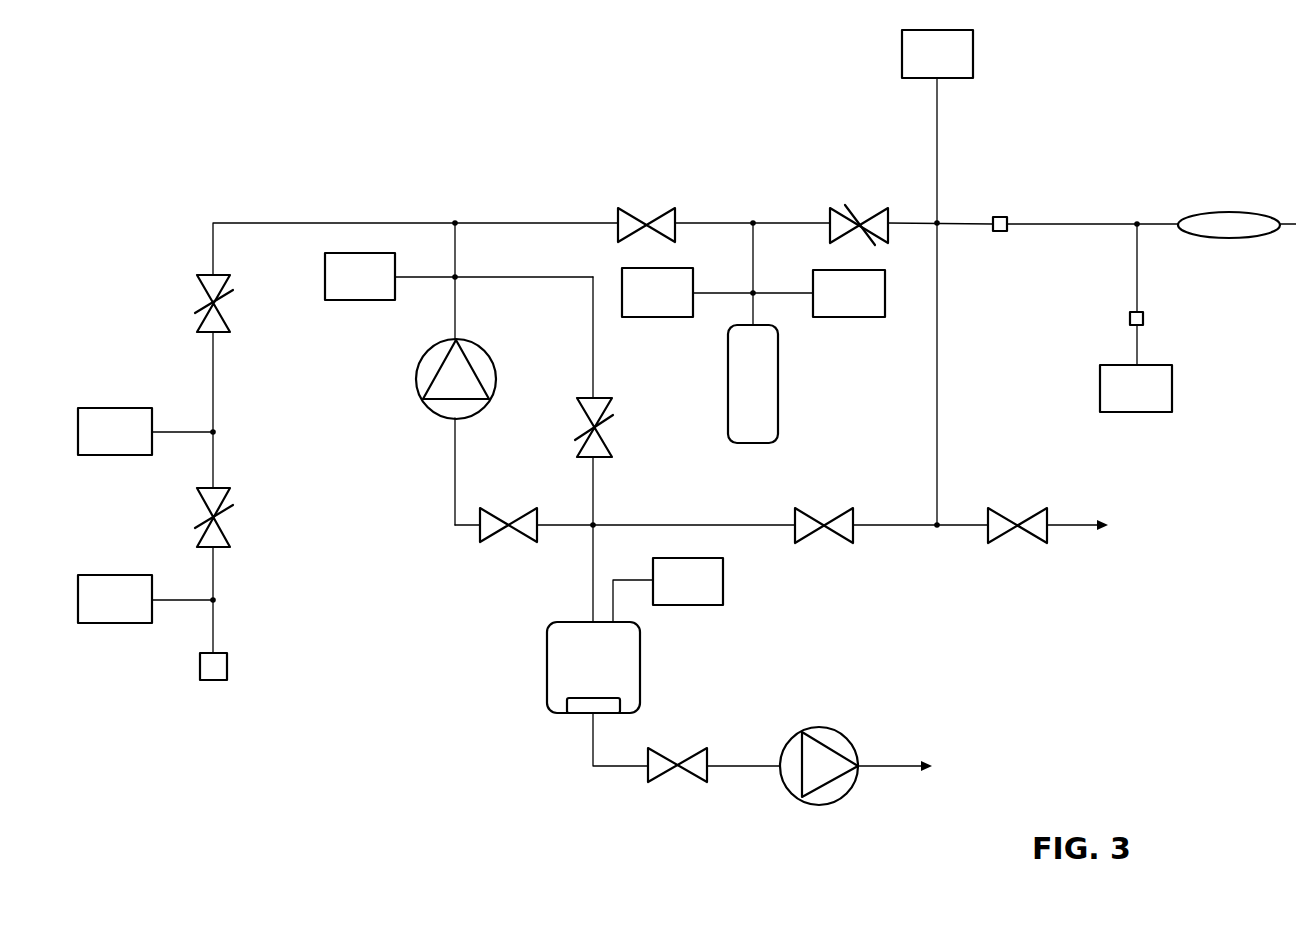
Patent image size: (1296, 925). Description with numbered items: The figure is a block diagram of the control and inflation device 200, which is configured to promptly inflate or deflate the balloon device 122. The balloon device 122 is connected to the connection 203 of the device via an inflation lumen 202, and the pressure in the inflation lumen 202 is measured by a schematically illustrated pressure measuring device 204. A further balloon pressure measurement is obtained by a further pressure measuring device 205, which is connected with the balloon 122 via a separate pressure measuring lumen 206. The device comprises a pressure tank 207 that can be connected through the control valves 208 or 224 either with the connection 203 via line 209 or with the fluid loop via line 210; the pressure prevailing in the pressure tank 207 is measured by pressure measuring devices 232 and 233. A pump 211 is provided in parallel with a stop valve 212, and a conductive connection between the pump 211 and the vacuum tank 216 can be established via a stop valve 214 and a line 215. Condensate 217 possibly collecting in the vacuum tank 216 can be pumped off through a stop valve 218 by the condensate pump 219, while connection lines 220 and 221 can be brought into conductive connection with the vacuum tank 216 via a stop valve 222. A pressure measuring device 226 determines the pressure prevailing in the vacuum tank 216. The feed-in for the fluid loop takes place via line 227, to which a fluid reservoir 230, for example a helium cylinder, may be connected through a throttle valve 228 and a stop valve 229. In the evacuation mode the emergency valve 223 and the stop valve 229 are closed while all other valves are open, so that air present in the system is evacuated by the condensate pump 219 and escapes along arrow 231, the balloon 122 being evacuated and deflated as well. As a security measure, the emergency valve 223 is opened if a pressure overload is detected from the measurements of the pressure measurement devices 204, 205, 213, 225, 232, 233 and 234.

The balloon device 122 is at (1258, 218).
The control and inflation device 200 is at (1058, 103).
The inflation lumen 202 is at (1055, 222).
The connection 203 is at (1000, 217).
The pressure measuring device 204 is at (973, 53).
The further pressure measuring device 205 is at (1172, 385).
The pressure measuring lumen 206 is at (1138, 268).
The pressure tank 207 is at (778, 383).
The control valve 208 is at (655, 213).
The line 209 is at (915, 222).
The line 210 is at (512, 222).
The pump 211 is at (430, 415).
The stop valve 212 is at (610, 413).
The pressure measurement device 213 is at (113, 575).
The stop valve 214 is at (518, 535).
The line 215 is at (588, 548).
The vacuum tank 216 is at (547, 653).
The condensate 217 is at (582, 707).
The stop valve 218 is at (665, 757).
The condensate pump 219 is at (830, 727).
The connection line 220 is at (757, 523).
The connection line 221 is at (937, 345).
The stop valve 222 is at (812, 535).
The emergency valve 223 is at (1007, 513).
The control valve 224 is at (853, 218).
The pressure measurement device 225 is at (115, 408).
The pressure measuring device 226 is at (708, 605).
The line 227 is at (287, 222).
The throttle valve 228 is at (198, 325).
The stop valve 229 is at (227, 530).
The fluid reservoir 230 is at (227, 667).
The arrow 231 is at (880, 763).
The pressure measuring device 232 is at (672, 317).
The pressure measuring device 233 is at (865, 317).
The pressure measurement device 234 is at (342, 300).